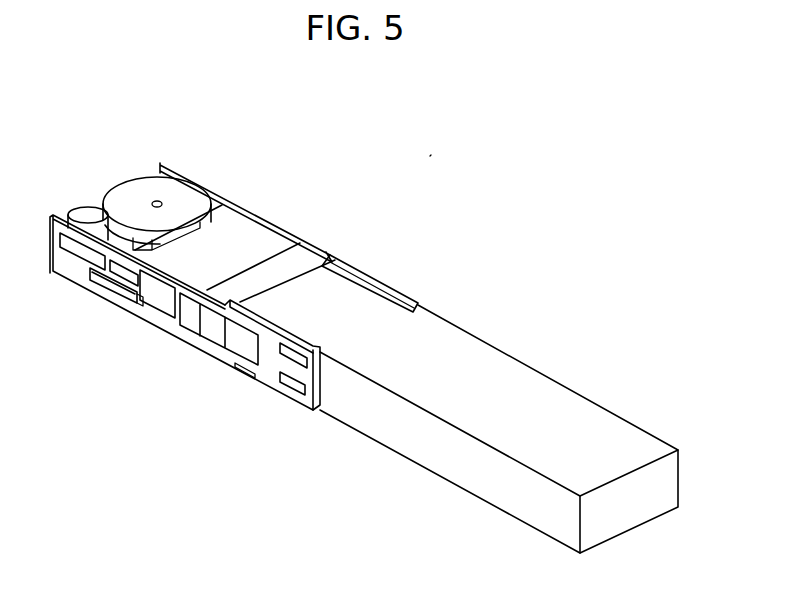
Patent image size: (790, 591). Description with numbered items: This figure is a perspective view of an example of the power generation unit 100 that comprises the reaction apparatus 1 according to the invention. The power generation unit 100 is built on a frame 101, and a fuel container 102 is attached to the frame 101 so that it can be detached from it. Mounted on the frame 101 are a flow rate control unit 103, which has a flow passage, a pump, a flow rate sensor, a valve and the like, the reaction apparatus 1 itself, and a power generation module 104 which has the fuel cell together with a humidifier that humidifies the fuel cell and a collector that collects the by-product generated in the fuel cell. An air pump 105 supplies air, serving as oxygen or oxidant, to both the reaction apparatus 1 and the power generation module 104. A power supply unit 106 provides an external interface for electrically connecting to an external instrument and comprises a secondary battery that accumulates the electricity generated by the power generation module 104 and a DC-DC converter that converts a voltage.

The power generation unit 100 is at (428, 158).
The frame 101 is at (270, 373).
The fuel container 102 is at (513, 377).
The flow rate control unit 103 is at (330, 282).
The power generation module 104 is at (253, 241).
The air pump 105 is at (185, 198).
The power supply unit 106 is at (90, 222).
The reaction apparatus 1 is at (300, 252).